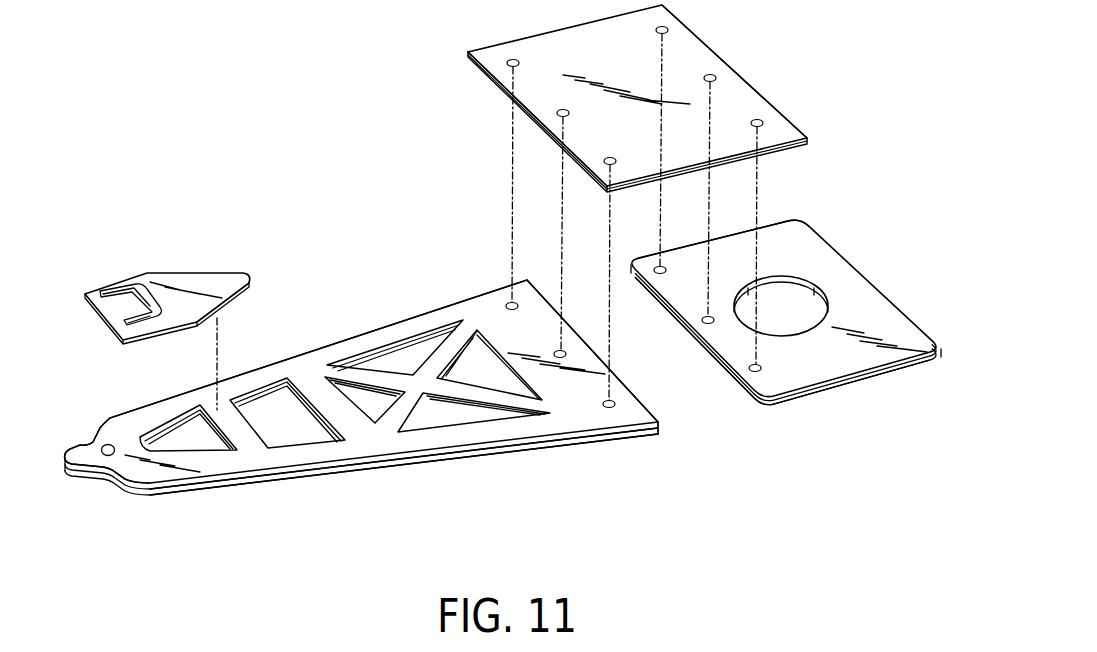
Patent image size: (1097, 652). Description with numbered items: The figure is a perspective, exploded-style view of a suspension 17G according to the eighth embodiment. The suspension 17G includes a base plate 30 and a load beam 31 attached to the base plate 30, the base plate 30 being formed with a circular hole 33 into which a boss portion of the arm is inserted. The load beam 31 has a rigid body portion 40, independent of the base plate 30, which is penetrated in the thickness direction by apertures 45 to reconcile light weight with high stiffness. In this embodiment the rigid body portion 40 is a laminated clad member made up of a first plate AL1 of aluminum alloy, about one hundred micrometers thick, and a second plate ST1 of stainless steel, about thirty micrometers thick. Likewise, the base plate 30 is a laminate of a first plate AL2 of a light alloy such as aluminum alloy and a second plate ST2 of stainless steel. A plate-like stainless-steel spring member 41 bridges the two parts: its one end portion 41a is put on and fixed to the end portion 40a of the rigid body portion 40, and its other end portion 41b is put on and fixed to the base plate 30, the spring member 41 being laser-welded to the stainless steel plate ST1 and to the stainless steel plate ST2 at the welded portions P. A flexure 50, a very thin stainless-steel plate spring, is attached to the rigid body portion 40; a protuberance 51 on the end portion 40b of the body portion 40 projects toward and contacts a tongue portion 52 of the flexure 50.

The suspension 17G is at (308, 163).
The base plate 30 is at (810, 400).
The load beam 31 is at (591, 458).
The circular hole 33 is at (808, 302).
The rigid body portion 40 is at (435, 464).
The end portion of the rigid body portion 40a is at (612, 376).
The end portion of the body portion 40b is at (147, 478).
The spring member 41 is at (688, 45).
The one end portion of the spring member 41a is at (500, 91).
The other end portion of the spring member 41b is at (738, 70).
The apertures 45 is at (270, 400).
The flexure 50 is at (198, 275).
The protuberance 51 is at (108, 444).
The tongue portion 52 is at (122, 302).
The first plate AL1 is at (350, 476).
The first plate AL2 is at (728, 391).
The welded portions P is at (507, 303).
The second plate ST1 is at (420, 315).
The second plate ST2 is at (810, 229).